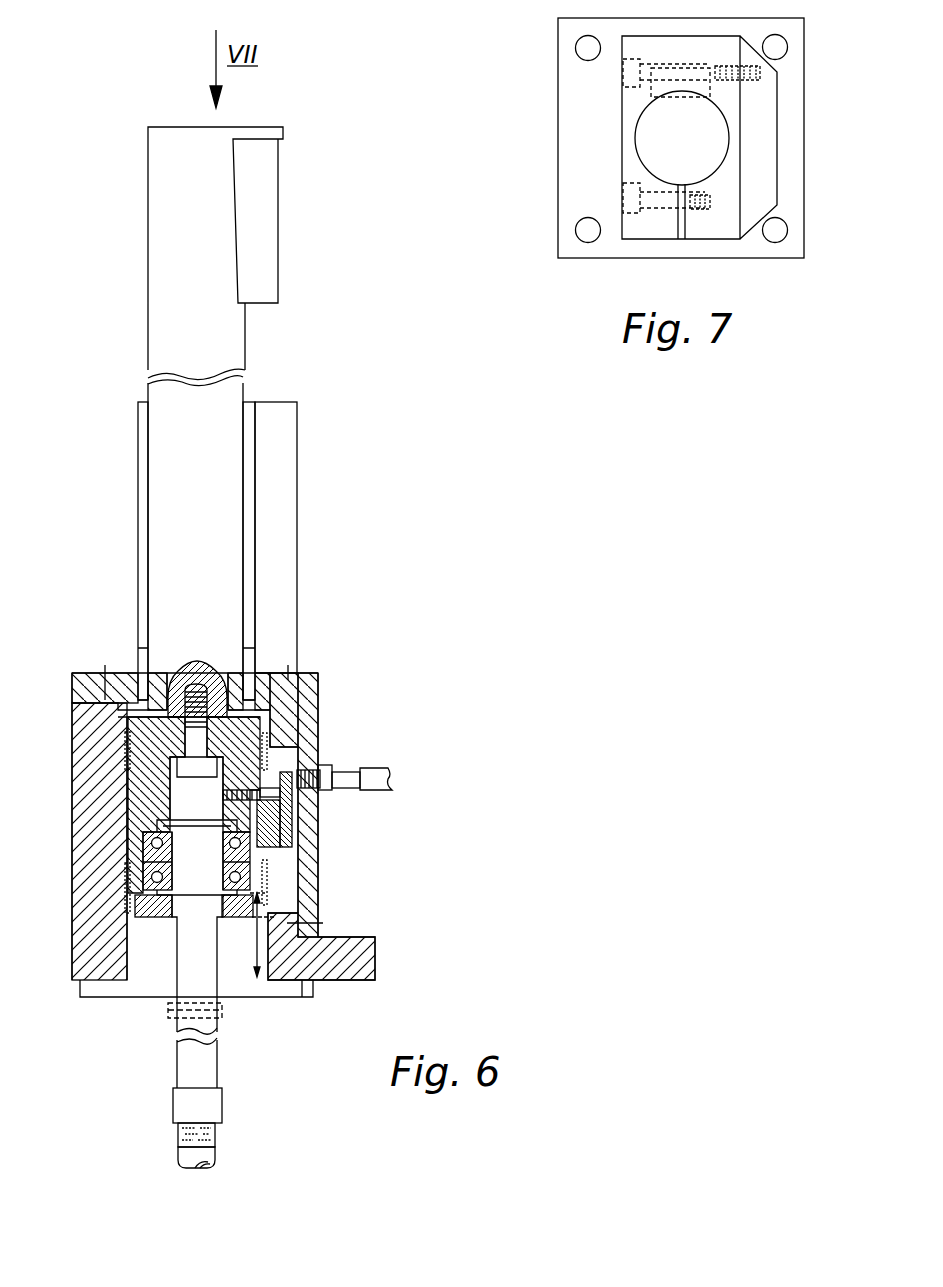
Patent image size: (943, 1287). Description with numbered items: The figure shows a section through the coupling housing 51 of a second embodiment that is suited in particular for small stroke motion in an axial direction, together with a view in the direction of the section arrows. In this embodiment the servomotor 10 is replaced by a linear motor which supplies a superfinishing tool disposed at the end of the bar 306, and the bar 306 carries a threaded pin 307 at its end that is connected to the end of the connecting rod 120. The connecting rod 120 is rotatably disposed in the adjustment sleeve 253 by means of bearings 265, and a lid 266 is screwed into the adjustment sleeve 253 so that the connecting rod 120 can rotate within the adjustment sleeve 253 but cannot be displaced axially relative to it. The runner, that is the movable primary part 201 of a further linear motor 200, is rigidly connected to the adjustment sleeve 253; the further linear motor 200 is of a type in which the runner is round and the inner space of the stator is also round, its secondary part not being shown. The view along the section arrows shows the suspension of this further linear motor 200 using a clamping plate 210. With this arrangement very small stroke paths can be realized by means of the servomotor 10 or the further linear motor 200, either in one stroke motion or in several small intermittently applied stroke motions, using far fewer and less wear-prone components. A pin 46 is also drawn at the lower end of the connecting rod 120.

In FIG. 7, the servomotor 10 is at (798, 172).
In FIG. 6, the pin 46 is at (168, 1010).
In FIG. 6, the coupling housing 51 is at (85, 790).
In FIG. 6, the connecting rod 120 is at (208, 985).
In FIG. 6, the further linear motor 200 is at (163, 522).
In FIG. 7, the further linear motor 200 is at (650, 148).
In FIG. 6, the movable primary part 201 is at (185, 672).
In FIG. 6, the clamping plate 210 is at (85, 688).
In FIG. 7, the clamping plate 210 is at (568, 67).
In FIG. 6, the adjustment sleeve 253 is at (147, 760).
In FIG. 6, the bearings 265 is at (258, 872).
In FIG. 6, the lid 266 is at (147, 918).
In FIG. 6, the bar 306 is at (212, 1156).
In FIG. 6, the threaded pin 307 is at (222, 1135).